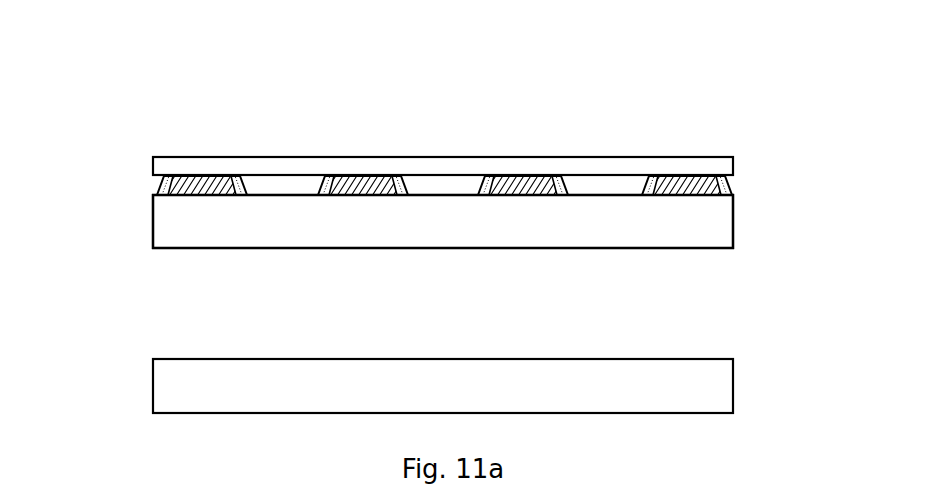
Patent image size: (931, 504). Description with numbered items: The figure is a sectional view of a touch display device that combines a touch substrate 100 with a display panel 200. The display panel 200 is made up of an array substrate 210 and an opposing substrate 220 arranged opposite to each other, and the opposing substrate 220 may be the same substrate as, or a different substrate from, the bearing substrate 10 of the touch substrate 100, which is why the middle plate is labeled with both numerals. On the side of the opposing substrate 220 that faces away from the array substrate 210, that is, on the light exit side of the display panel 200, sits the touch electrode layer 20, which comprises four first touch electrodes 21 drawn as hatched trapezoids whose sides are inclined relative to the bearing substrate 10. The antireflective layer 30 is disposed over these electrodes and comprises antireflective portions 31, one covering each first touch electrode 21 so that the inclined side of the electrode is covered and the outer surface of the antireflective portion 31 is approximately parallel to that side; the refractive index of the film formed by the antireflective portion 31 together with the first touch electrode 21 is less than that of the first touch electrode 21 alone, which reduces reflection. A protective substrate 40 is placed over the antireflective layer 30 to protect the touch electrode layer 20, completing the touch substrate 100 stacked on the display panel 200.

The touch substrate 100 is at (138, 163).
The display panel 200 is at (148, 215).
The protective substrate 40 is at (722, 167).
The antireflective layer 30 is at (213, 108).
The antireflective portion 31 is at (172, 176).
The bearing substrate 10 is at (443, 221).
The opposing substrate 220 is at (443, 221).
The array substrate 210 is at (683, 390).
The touch electrode layer 20 is at (595, 298).
The first touch electrode 21 is at (207, 196).